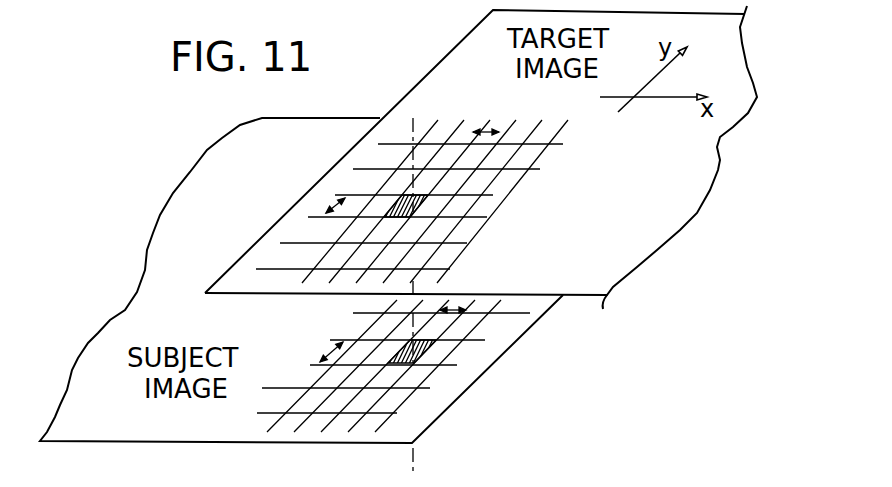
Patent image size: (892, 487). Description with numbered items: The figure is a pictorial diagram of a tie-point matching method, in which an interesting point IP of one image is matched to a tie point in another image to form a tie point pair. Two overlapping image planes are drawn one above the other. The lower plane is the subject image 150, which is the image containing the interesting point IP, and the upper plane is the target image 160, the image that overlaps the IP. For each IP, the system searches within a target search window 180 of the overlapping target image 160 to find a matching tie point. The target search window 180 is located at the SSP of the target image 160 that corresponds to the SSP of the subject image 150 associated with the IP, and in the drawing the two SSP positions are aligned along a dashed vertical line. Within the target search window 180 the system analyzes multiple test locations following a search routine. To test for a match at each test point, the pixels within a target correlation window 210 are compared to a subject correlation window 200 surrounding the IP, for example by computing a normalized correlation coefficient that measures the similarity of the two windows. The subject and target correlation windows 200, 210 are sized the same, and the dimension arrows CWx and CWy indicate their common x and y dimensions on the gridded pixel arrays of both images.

The subject image 150 is at (141, 294).
The target image 160 is at (668, 212).
The target search window 180 is at (447, 248).
The subject correlation window 200 is at (400, 363).
The target correlation window 210 is at (424, 199).
The element SSP is at (423, 196).
The interesting point IP is at (420, 354).
The correlation window x dimension CWx is at (485, 132).
The correlation window y dimension CWy is at (327, 213).